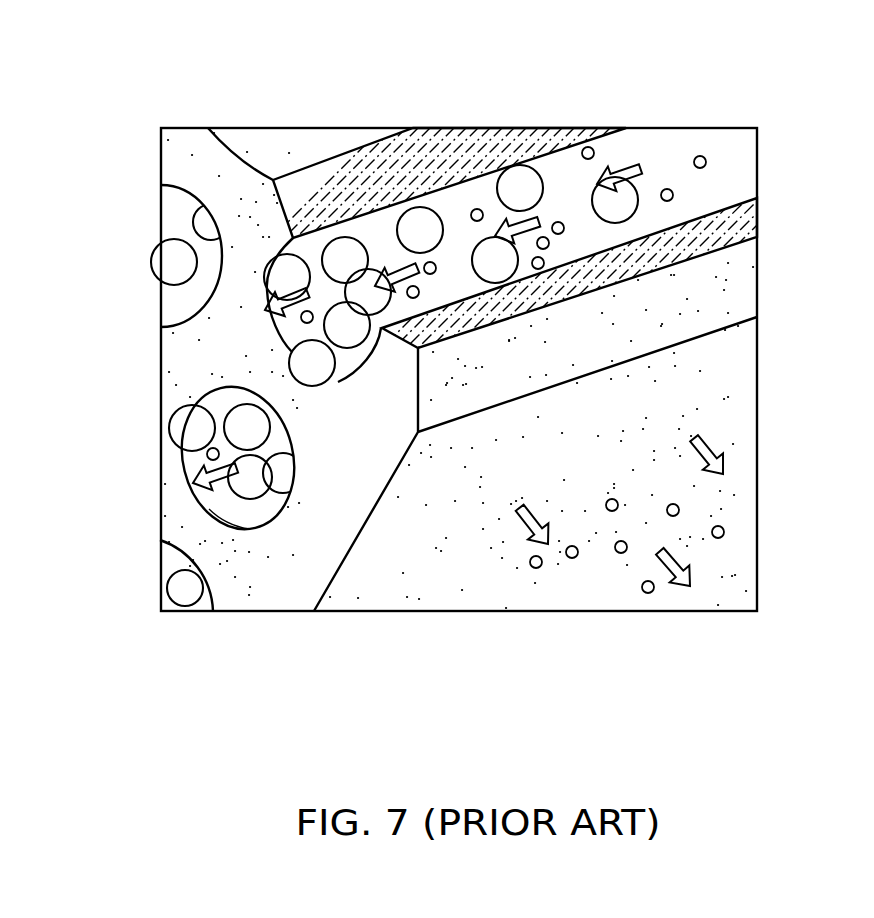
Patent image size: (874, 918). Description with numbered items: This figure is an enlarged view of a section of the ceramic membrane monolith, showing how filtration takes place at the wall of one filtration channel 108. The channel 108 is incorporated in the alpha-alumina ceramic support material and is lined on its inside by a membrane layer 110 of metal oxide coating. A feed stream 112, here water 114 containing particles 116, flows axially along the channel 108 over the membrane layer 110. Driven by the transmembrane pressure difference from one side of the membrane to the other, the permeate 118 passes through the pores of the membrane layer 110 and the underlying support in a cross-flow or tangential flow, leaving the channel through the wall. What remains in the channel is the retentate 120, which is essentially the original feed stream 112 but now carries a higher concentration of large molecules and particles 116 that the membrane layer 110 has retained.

The filtration channel 108 is at (217, 492).
The membrane layer 110 is at (277, 330).
The feed stream 112 is at (627, 167).
The water 114 is at (481, 207).
The particles 116 is at (532, 160).
The permeate 118 is at (692, 574).
The retentate 120 is at (265, 305).